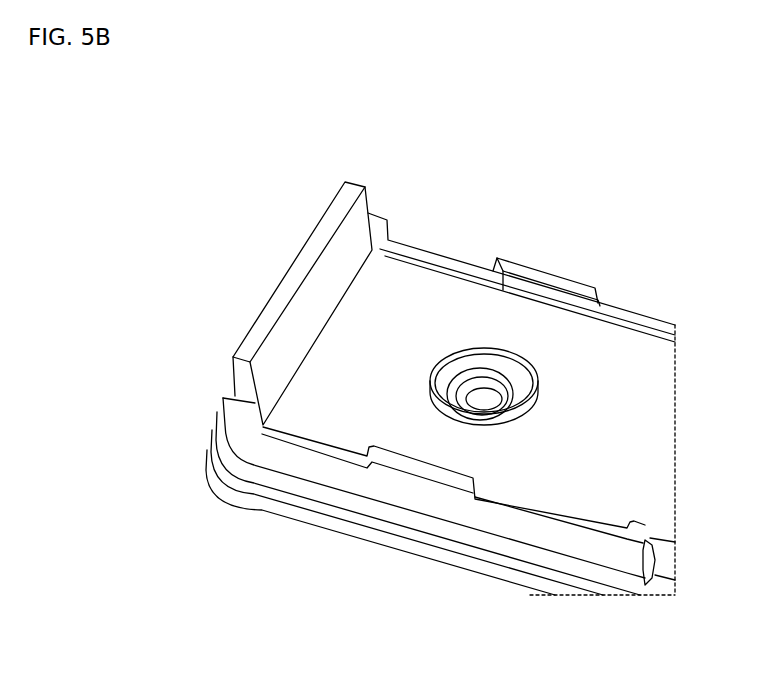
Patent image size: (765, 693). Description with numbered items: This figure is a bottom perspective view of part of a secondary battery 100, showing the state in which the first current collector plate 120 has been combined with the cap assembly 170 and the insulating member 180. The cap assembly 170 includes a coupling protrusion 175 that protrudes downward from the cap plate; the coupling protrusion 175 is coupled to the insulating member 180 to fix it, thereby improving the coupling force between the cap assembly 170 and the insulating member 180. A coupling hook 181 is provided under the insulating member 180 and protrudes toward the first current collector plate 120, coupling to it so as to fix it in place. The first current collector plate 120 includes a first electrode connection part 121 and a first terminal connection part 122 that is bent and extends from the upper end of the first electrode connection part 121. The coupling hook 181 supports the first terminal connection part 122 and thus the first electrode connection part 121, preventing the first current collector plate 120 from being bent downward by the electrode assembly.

The secondary battery 100 is at (95, 153).
The first current collector plate 120 is at (166, 331).
The first electrode connection part 121 is at (243, 338).
The first terminal connection part 122 is at (340, 337).
The cap assembly 170 is at (258, 505).
The coupling protrusion 175 is at (460, 430).
The insulating member 180 is at (432, 242).
The coupling hook 181 is at (553, 279).